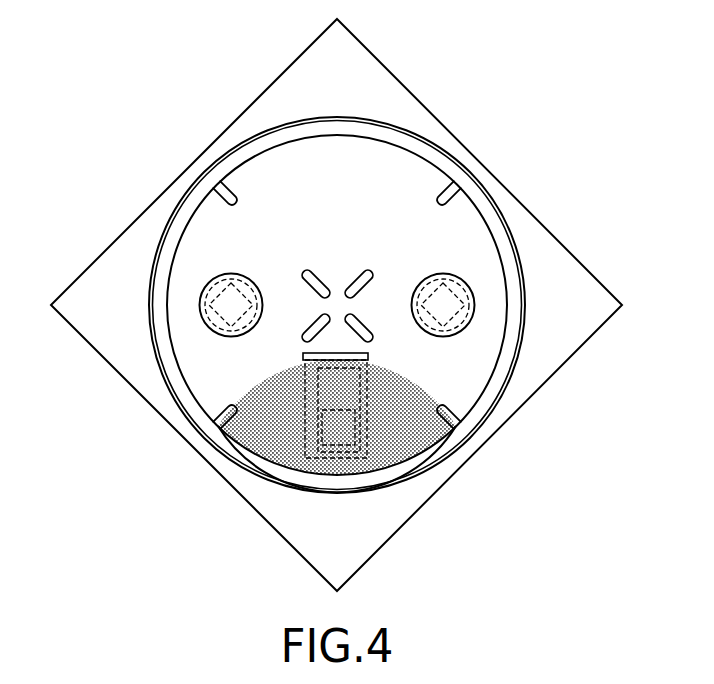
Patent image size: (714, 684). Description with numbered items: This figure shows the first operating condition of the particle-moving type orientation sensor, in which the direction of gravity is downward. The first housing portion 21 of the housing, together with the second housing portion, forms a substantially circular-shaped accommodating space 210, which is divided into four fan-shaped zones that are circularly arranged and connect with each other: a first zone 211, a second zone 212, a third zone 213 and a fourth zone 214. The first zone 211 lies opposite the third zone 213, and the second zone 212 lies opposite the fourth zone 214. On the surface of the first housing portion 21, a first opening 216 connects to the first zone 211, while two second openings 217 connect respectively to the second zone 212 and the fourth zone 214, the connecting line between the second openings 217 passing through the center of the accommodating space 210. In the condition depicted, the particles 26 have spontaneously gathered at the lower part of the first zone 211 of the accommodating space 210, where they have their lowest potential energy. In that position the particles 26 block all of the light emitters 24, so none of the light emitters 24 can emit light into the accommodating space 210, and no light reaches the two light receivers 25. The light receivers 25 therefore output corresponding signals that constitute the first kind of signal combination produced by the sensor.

The first housing portion 21 is at (298, 77).
The accommodating space 210 is at (278, 182).
The first zone 211 is at (388, 446).
The second zone 212 is at (200, 240).
The third zone 213 is at (360, 155).
The fourth zone 214 is at (475, 238).
The first opening 216 is at (332, 472).
The second openings 217 is at (208, 313).
The light emitter 24 is at (300, 398).
The light receivers 25 is at (224, 302).
The particles 26 is at (417, 383).